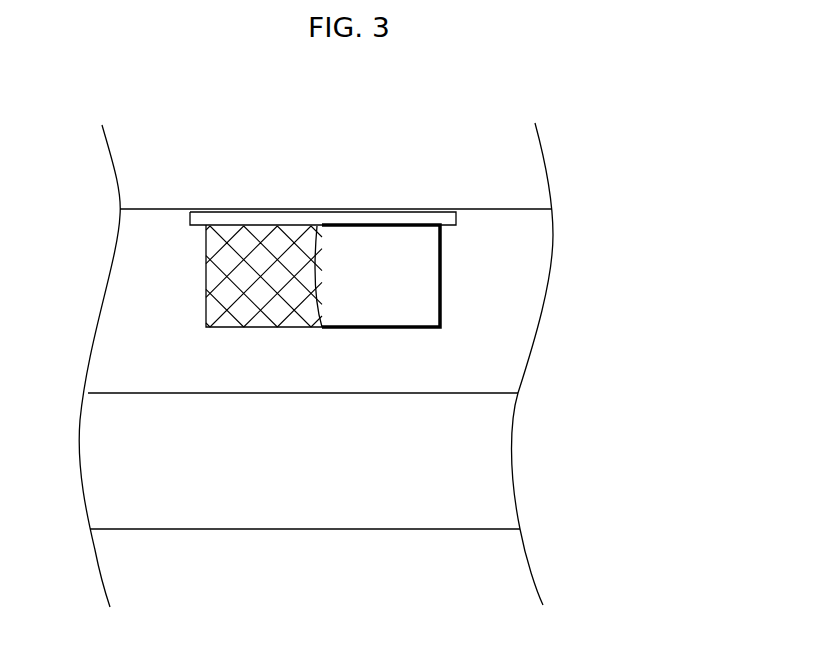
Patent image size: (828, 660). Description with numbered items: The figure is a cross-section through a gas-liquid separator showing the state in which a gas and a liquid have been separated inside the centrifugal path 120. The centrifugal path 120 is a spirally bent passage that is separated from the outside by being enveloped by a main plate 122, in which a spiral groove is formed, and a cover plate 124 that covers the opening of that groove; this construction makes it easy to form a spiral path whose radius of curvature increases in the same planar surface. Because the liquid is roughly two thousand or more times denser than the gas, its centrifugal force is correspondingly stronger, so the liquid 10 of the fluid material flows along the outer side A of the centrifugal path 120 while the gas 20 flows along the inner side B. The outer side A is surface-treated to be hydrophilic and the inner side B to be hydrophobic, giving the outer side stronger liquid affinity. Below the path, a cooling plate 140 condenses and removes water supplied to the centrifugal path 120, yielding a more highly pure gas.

The liquid 10 is at (263, 237).
The gas 20 is at (380, 242).
The centrifugal path 120 is at (323, 328).
The main plate 122 is at (535, 263).
The cover plate 124 is at (321, 225).
The cooling plate 140 is at (507, 422).
The outer side A is at (206, 267).
The inner side B is at (442, 252).